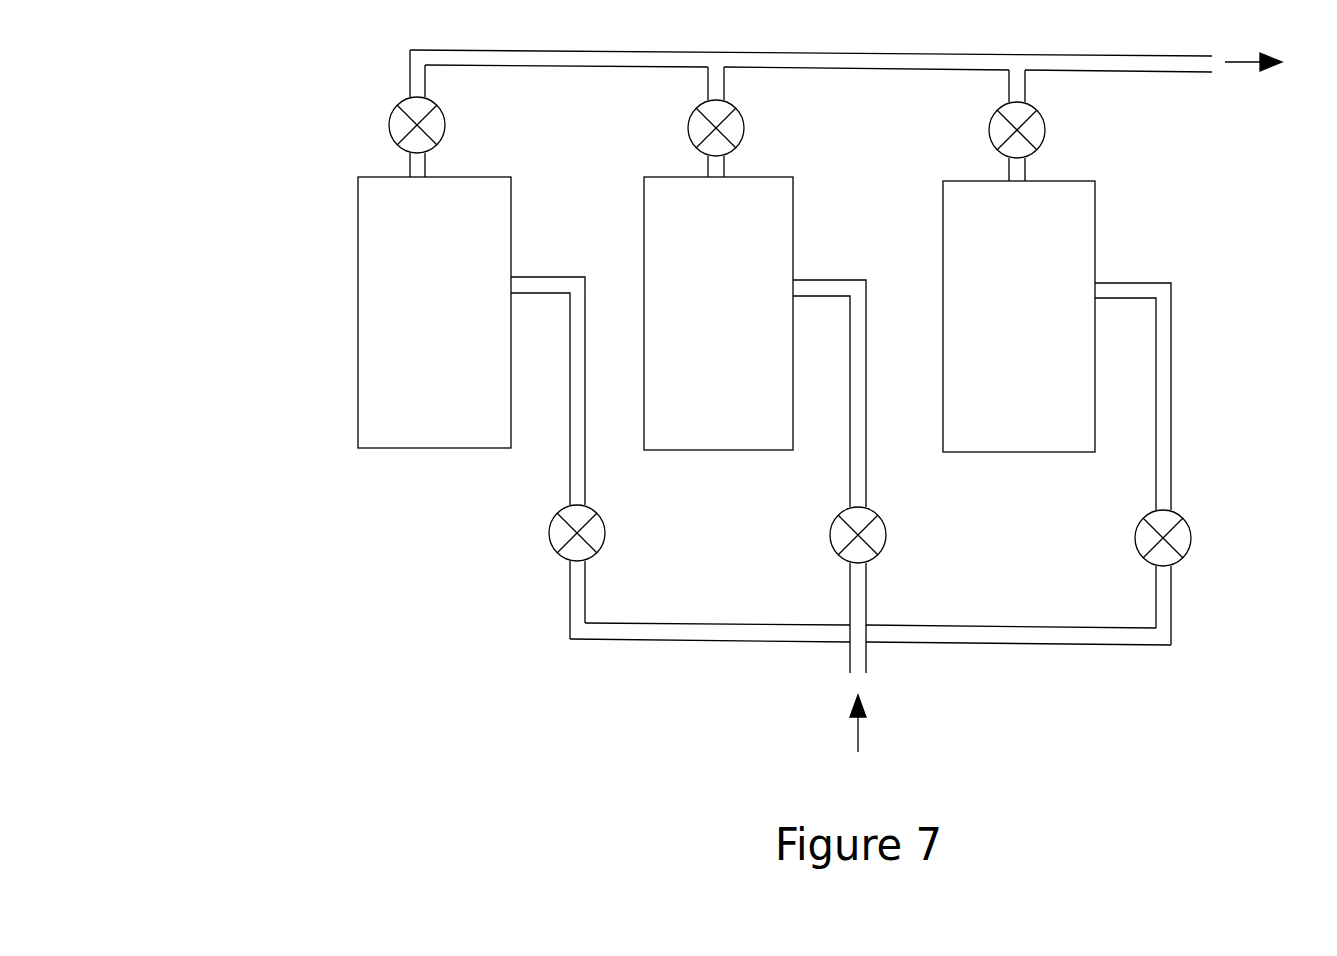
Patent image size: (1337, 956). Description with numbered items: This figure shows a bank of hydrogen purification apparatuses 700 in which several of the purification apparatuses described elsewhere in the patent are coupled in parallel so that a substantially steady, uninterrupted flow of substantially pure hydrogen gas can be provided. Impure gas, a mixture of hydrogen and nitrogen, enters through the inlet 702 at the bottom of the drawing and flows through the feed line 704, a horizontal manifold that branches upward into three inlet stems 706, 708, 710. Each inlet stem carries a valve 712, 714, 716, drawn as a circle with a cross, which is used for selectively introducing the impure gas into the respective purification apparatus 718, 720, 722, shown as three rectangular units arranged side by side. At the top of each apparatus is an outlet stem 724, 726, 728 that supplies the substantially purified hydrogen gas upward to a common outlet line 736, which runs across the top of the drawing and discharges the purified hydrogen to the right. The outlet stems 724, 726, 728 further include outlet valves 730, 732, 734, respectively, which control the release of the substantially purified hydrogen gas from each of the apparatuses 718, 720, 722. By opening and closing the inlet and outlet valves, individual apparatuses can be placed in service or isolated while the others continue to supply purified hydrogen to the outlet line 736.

The bank of purification apparatuses 700 is at (208, 98).
The inlet 702 is at (848, 664).
The feed line 704 is at (600, 640).
The inlet stem 706 is at (567, 610).
The inlet stem 708 is at (848, 612).
The inlet stem 710 is at (1154, 612).
The valve 712 is at (608, 530).
The valve 714 is at (830, 540).
The valve 716 is at (1135, 545).
The purification apparatus 718 is at (512, 205).
The purification apparatus 720 is at (795, 228).
The purification apparatus 722 is at (1097, 218).
The outlet stem 724 is at (1003, 177).
The outlet stem 726 is at (702, 173).
The outlet stem 728 is at (405, 173).
The outlet valve 730 is at (390, 114).
The outlet valve 732 is at (688, 128).
The outlet valve 734 is at (990, 132).
The outlet line 736 is at (800, 52).